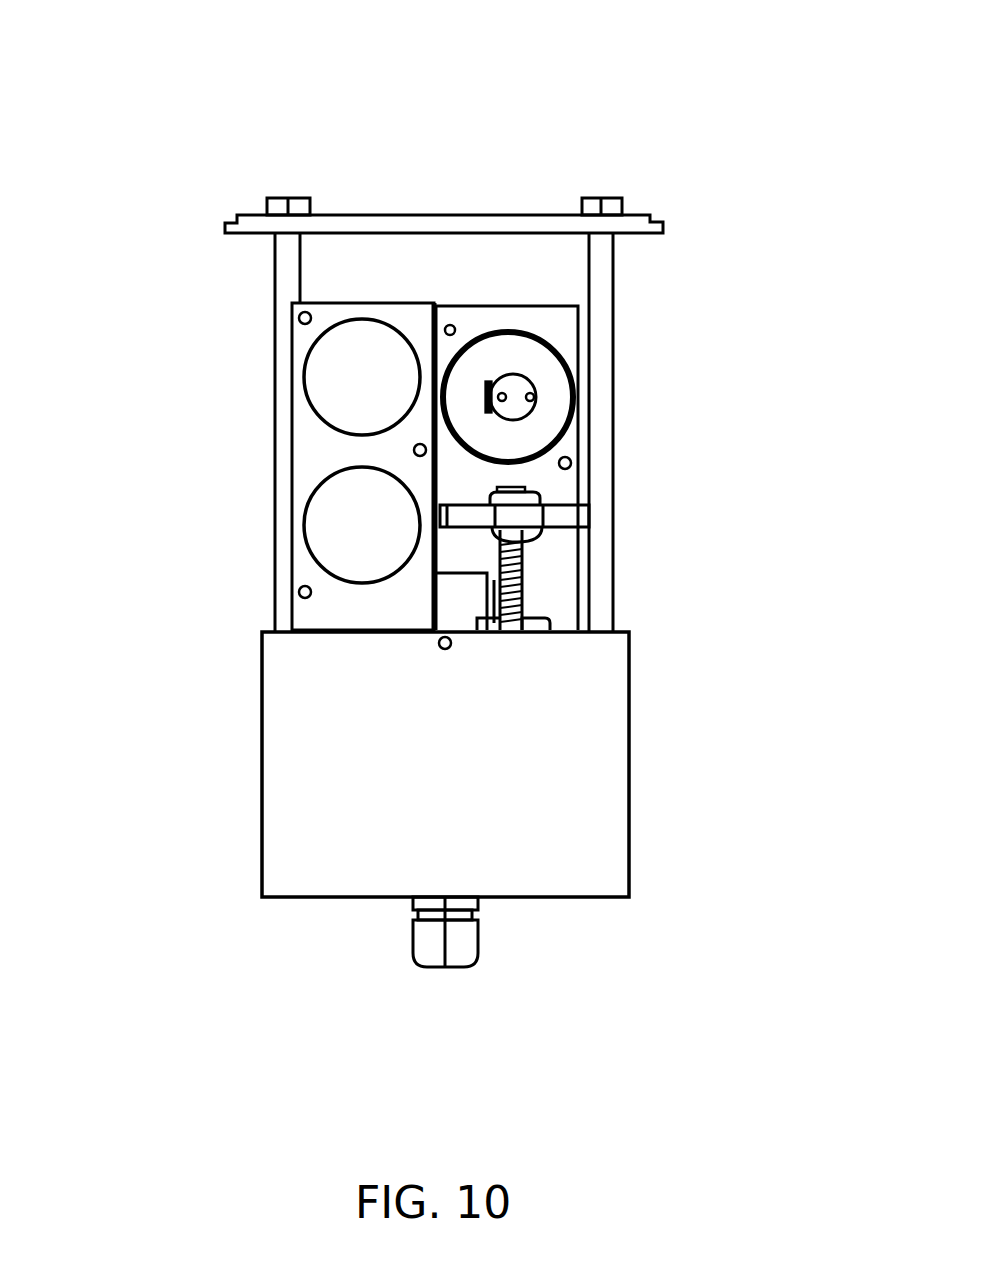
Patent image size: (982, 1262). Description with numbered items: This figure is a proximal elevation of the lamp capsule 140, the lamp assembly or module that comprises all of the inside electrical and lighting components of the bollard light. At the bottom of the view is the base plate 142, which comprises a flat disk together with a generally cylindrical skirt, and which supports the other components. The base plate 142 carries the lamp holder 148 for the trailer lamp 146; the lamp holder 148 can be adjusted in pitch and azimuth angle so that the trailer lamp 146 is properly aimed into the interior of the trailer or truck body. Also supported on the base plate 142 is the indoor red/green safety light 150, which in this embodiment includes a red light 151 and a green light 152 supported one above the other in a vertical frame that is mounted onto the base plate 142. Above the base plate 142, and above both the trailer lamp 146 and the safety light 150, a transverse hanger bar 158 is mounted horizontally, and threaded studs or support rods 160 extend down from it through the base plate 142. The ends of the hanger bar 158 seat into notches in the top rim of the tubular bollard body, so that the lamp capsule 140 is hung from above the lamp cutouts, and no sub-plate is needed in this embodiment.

The lamp capsule 140 is at (827, 962).
The base plate 142 is at (615, 695).
The trailer lamp 146 is at (527, 362).
The lamp holder 148 is at (550, 482).
The safety light 150 is at (327, 442).
The red light 151 is at (348, 523).
The green light 152 is at (337, 343).
The hanger bar 158 is at (445, 215).
The support rods 160 is at (273, 510).